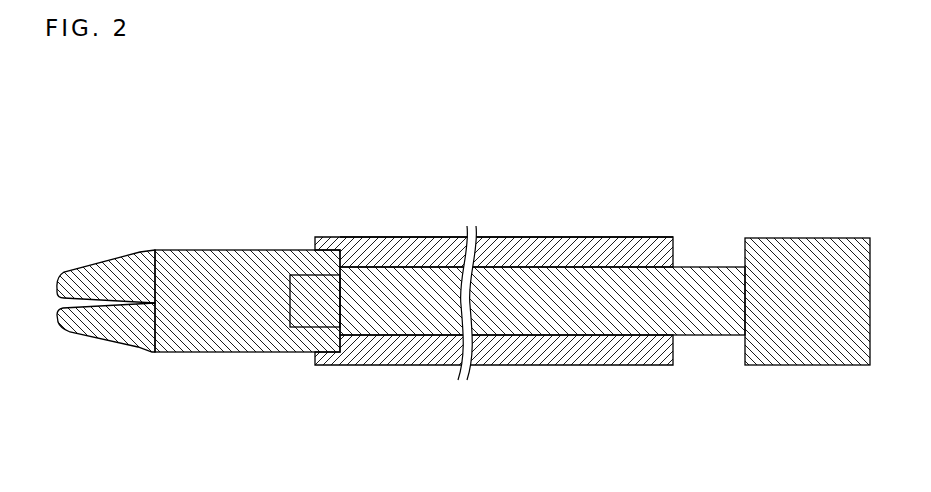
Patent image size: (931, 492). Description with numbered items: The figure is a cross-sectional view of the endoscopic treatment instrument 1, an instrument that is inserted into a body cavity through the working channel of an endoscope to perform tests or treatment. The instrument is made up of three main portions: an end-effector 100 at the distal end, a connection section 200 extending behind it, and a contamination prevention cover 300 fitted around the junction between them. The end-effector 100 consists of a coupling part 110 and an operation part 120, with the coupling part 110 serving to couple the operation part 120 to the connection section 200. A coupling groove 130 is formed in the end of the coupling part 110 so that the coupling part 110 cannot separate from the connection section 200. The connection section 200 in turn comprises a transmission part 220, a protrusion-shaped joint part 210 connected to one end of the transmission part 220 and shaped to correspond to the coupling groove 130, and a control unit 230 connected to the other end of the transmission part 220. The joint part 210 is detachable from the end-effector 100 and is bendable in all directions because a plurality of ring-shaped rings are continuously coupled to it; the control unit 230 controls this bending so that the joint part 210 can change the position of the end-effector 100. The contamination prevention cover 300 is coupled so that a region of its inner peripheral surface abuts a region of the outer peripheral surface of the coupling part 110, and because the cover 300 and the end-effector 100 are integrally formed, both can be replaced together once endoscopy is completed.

The endoscopic treatment instrument 1 is at (672, 129).
The end-effector 100 is at (215, 371).
The coupling part 110 is at (219, 249).
The operation part 120 is at (125, 256).
The coupling groove 130 is at (291, 275).
The connection section 200 is at (710, 253).
The joint part 210 is at (374, 366).
The transmission part 220 is at (550, 237).
The control unit 230 is at (806, 238).
The contamination prevention cover 300 is at (618, 237).